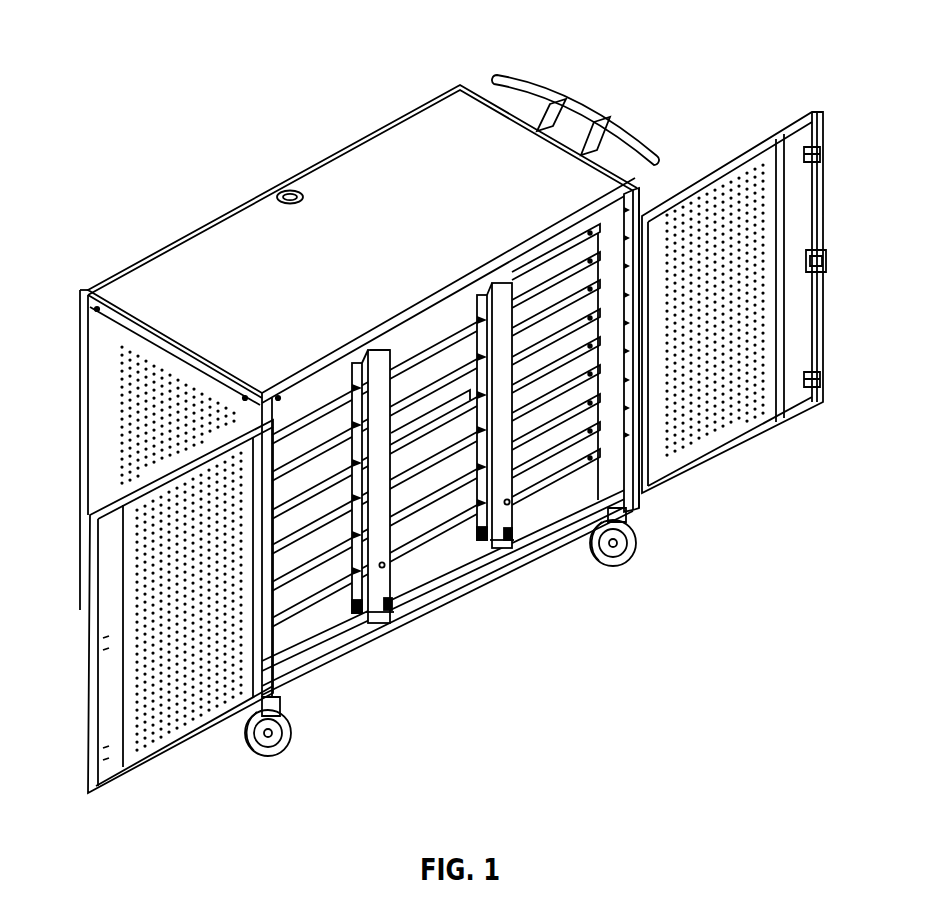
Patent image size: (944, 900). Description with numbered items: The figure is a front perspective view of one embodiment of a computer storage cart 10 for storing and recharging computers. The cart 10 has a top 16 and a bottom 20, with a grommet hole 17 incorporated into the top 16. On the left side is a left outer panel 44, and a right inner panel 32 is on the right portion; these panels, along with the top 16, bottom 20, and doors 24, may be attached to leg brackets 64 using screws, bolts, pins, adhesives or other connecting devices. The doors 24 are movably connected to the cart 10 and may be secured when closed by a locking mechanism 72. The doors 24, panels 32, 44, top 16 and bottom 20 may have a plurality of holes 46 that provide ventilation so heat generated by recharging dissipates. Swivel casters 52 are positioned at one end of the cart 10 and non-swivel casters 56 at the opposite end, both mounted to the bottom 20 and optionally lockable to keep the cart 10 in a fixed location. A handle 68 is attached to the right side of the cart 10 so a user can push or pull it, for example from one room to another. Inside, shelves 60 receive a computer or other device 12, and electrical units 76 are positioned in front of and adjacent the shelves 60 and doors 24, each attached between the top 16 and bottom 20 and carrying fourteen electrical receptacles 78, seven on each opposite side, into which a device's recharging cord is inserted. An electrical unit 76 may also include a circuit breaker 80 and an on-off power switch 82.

The computer storage cart 10 is at (95, 58).
The computer or other device 12 is at (433, 410).
The top 16 is at (232, 230).
The grommet hole 17 is at (290, 190).
The bottom 20 is at (278, 655).
The doors 24 is at (107, 730).
The right inner panel 32 is at (612, 430).
The left outer panel 44 is at (105, 440).
The holes 46 is at (120, 470).
The swivel casters 52 is at (624, 565).
The casters 56 is at (264, 768).
The shelves 60 is at (413, 548).
The leg brackets 64 is at (262, 390).
The handle 68 is at (525, 85).
The locking mechanism 72 is at (826, 266).
The electrical units 76 is at (397, 608).
The electrical receptacles 78 is at (365, 612).
The circuit breaker 80 is at (386, 567).
The on-off power switch 82 is at (386, 606).